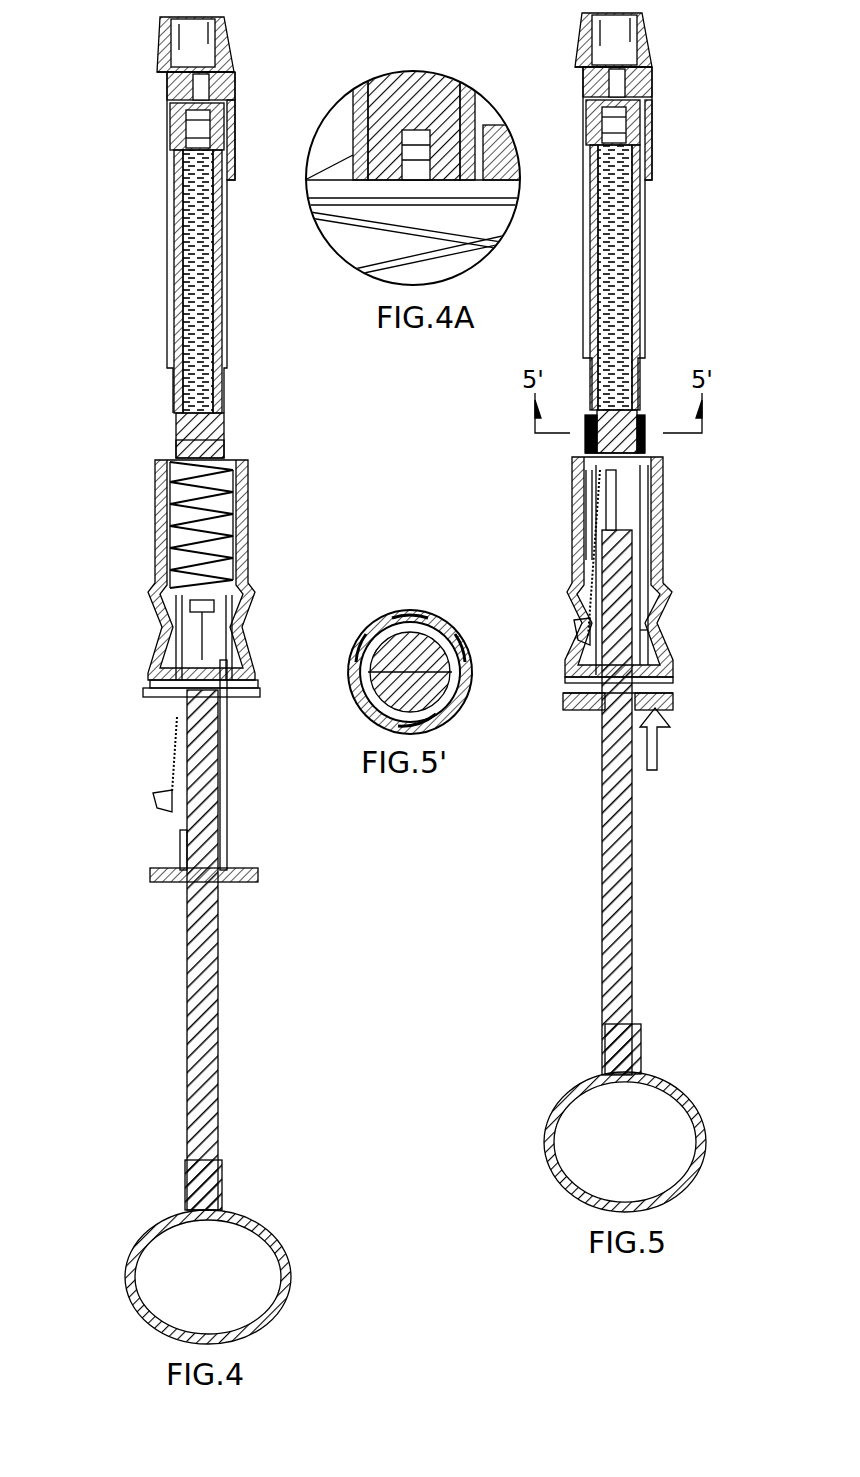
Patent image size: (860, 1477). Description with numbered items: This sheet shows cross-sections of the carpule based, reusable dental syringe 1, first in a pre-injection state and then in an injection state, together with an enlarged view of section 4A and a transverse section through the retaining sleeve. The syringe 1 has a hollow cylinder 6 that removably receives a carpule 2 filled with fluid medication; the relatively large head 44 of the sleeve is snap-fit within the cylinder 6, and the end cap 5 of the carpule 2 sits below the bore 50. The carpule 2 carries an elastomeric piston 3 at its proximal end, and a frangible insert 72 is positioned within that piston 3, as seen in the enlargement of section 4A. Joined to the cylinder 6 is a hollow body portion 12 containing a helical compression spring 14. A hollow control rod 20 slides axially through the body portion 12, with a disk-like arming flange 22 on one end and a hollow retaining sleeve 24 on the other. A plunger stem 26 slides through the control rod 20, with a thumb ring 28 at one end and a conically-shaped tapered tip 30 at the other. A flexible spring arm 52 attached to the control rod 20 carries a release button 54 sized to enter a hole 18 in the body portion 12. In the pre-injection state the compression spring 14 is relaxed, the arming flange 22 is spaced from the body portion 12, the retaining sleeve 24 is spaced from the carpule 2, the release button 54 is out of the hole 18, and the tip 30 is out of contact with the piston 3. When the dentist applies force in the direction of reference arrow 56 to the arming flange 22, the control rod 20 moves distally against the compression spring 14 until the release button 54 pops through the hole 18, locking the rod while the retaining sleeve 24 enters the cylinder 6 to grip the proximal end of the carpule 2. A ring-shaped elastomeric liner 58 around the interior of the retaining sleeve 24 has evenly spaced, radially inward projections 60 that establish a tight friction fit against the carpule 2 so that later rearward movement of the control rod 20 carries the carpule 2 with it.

In FIG. 4, the dental syringe 1 is at (128, 246).
In FIG. 5, the dental syringe 1 is at (700, 283).
In FIG. 4, the carpule 2 is at (197, 318).
In FIG. 4A, the carpule 2 is at (465, 90).
In FIG. 5', the carpule 2 is at (383, 625).
In FIG. 5, the carpule 2 is at (645, 230).
In FIG. 4, the piston 3 is at (222, 408).
In FIG. 4A, the piston 3 is at (408, 78).
In FIG. 5', the piston 3 is at (363, 645).
In FIG. 5, the piston 3 is at (640, 400).
In FIG. 4, the section 4a 4A is at (225, 438).
In FIG. 4, the end cap 5 is at (168, 122).
In FIG. 4, the cylinder 6 is at (235, 148).
In FIG. 5, the cylinder 6 is at (650, 123).
In FIG. 4, the body portion 12 is at (165, 502).
In FIG. 5, the body portion 12 is at (663, 550).
In FIG. 4, the compression spring 14 is at (245, 468).
In FIG. 5, the compression spring 14 is at (663, 478).
In FIG. 4, the hole 18 is at (163, 627).
In FIG. 5, the hole 18 is at (573, 620).
In FIG. 5, the control rod 20 is at (653, 630).
In FIG. 4, the arming flange 22 is at (233, 880).
In FIG. 5, the arming flange 22 is at (672, 707).
In FIG. 4, the retaining sleeve 24 is at (253, 688).
In FIG. 5, the retaining sleeve 24 is at (647, 437).
In FIG. 4, the plunger stem 26 is at (219, 1000).
In FIG. 5, the plunger stem 26 is at (633, 867).
In FIG. 4, the thumb ring 28 is at (236, 1208).
In FIG. 5, the thumb ring 28 is at (696, 1103).
In FIG. 4, the tapered tip 30 is at (205, 603).
In FIG. 4, the head 44 is at (168, 88).
In FIG. 4, the bore 50 is at (232, 72).
In FIG. 4, the spring arm 52 is at (177, 728).
In FIG. 5, the spring arm 52 is at (600, 543).
In FIG. 4, the release button 54 is at (157, 808).
In FIG. 5, the release button 54 is at (577, 632).
In FIG. 5, the reference arrow 56 is at (657, 760).
In FIG. 5', the liner 58 is at (472, 670).
In FIG. 5, the liner 58 is at (583, 455).
In FIG. 5', the projections 60 is at (420, 615).
In FIG. 4A, the frangible insert 72 is at (472, 187).